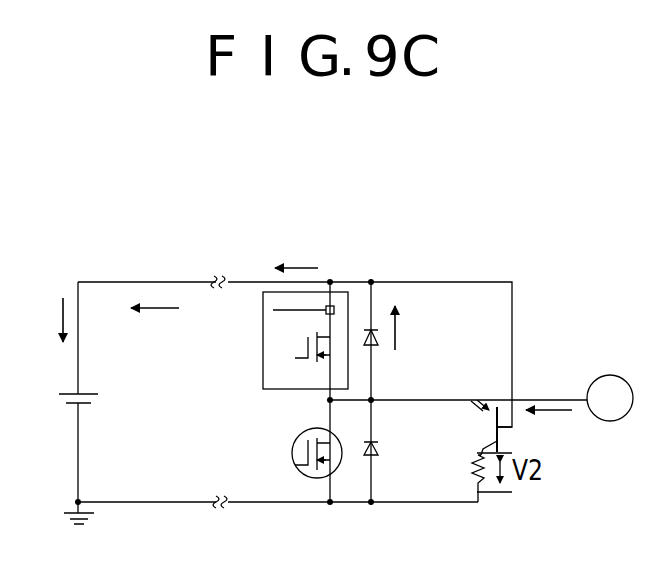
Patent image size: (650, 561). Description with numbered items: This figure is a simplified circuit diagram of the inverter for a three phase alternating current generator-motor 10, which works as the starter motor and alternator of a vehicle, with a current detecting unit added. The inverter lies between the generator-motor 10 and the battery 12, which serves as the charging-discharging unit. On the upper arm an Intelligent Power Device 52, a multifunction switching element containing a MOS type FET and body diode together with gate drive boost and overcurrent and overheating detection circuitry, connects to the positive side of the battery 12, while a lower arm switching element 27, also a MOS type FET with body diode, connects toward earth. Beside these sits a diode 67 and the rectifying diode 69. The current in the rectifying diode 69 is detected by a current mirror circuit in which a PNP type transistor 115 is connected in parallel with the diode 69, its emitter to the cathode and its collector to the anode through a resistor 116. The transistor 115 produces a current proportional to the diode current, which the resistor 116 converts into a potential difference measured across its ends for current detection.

The three phase alternating current generator-motor 10 is at (606, 375).
The battery 12 is at (64, 392).
The switching element of lower arm 27 is at (292, 453).
The Intelligent Power Device 52 is at (263, 352).
The diode 67 is at (373, 318).
The rectifying diode 69 is at (375, 457).
The PNP type transistor 115 is at (500, 434).
The resistor 116 is at (472, 470).